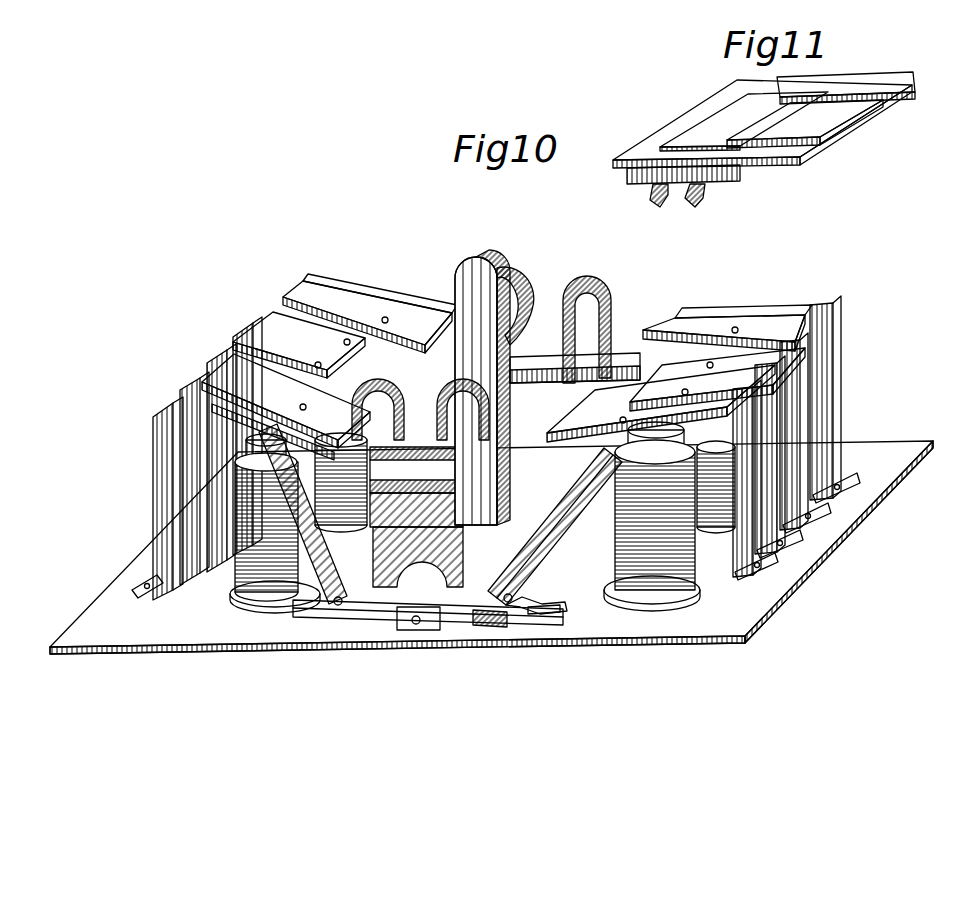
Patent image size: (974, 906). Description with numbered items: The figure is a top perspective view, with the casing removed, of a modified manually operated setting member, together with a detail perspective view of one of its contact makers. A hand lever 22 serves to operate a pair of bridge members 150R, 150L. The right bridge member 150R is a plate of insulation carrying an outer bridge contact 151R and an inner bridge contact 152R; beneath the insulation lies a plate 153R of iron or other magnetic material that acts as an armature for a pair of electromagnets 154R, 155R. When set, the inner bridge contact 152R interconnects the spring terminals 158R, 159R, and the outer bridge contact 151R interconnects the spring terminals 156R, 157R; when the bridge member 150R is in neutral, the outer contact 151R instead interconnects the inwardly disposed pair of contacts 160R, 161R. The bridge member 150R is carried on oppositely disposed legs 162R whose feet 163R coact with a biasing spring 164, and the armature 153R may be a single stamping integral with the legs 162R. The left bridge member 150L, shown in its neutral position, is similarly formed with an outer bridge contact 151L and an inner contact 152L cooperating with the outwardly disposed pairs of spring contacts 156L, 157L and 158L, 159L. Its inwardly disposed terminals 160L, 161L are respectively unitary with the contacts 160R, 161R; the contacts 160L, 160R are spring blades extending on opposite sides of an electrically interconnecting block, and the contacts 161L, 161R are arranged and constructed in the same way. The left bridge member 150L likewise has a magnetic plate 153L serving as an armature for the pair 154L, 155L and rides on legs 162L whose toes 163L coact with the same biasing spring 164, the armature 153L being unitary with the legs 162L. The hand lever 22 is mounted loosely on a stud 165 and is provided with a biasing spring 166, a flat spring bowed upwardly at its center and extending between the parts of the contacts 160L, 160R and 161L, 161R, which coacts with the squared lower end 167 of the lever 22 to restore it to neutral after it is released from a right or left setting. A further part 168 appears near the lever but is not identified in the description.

In FIG. 10, the hand lever 22 is at (482, 260).
In FIG. 10, the left bridge member 150L is at (352, 283).
In FIG. 10, the right bridge member 150R is at (723, 318).
In FIG. 11, the right bridge member 150R is at (893, 73).
In FIG. 10, the outer bridge contact 151L is at (292, 295).
In FIG. 10, the outer bridge contact 151R is at (760, 330).
In FIG. 11, the outer bridge contact 151R is at (817, 87).
In FIG. 10, the inner bridge contact 152L is at (262, 337).
In FIG. 10, the inner bridge contact 152R is at (700, 370).
In FIG. 11, the inner bridge contact 152R is at (870, 110).
In FIG. 10, the armature plate 153L is at (245, 430).
In FIG. 10, the armature plate 153R is at (643, 440).
In FIG. 11, the armature plate 153R is at (720, 182).
In FIG. 10, the electromagnet 154L is at (345, 493).
In FIG. 10, the electromagnet 154R is at (717, 500).
In FIG. 10, the electromagnet 155L is at (227, 575).
In FIG. 10, the electromagnet 155R is at (663, 593).
In FIG. 10, the spring contact 156L is at (236, 332).
In FIG. 10, the spring terminal 156R is at (823, 397).
In FIG. 10, the spring contact 157L is at (160, 414).
In FIG. 10, the spring terminal 157R is at (760, 550).
In FIG. 10, the spring contact 158L is at (215, 367).
In FIG. 10, the spring terminal 158R is at (813, 497).
In FIG. 10, the spring contact 159L is at (185, 392).
In FIG. 10, the spring terminal 159R is at (780, 517).
In FIG. 10, the inwardly disposed terminal 160L is at (523, 285).
In FIG. 10, the inwardly disposed contact 160R is at (595, 300).
In FIG. 10, the inwardly disposed terminal 161L is at (385, 468).
In FIG. 10, the inwardly disposed contact 161R is at (413, 445).
In FIG. 10, the legs 162L is at (240, 598).
In FIG. 10, the legs 162R is at (563, 593).
In FIG. 10, the toes 163L is at (303, 607).
In FIG. 10, the feet 163R is at (537, 610).
In FIG. 10, the biasing spring 164 is at (500, 620).
In FIG. 10, the biasing spring 166 is at (490, 540).
In FIG. 10, the stud 165 is at (543, 425).
In FIG. 10, the squared lower end 167 is at (507, 553).
In FIG. 10, the right lever strip 168 is at (527, 573).